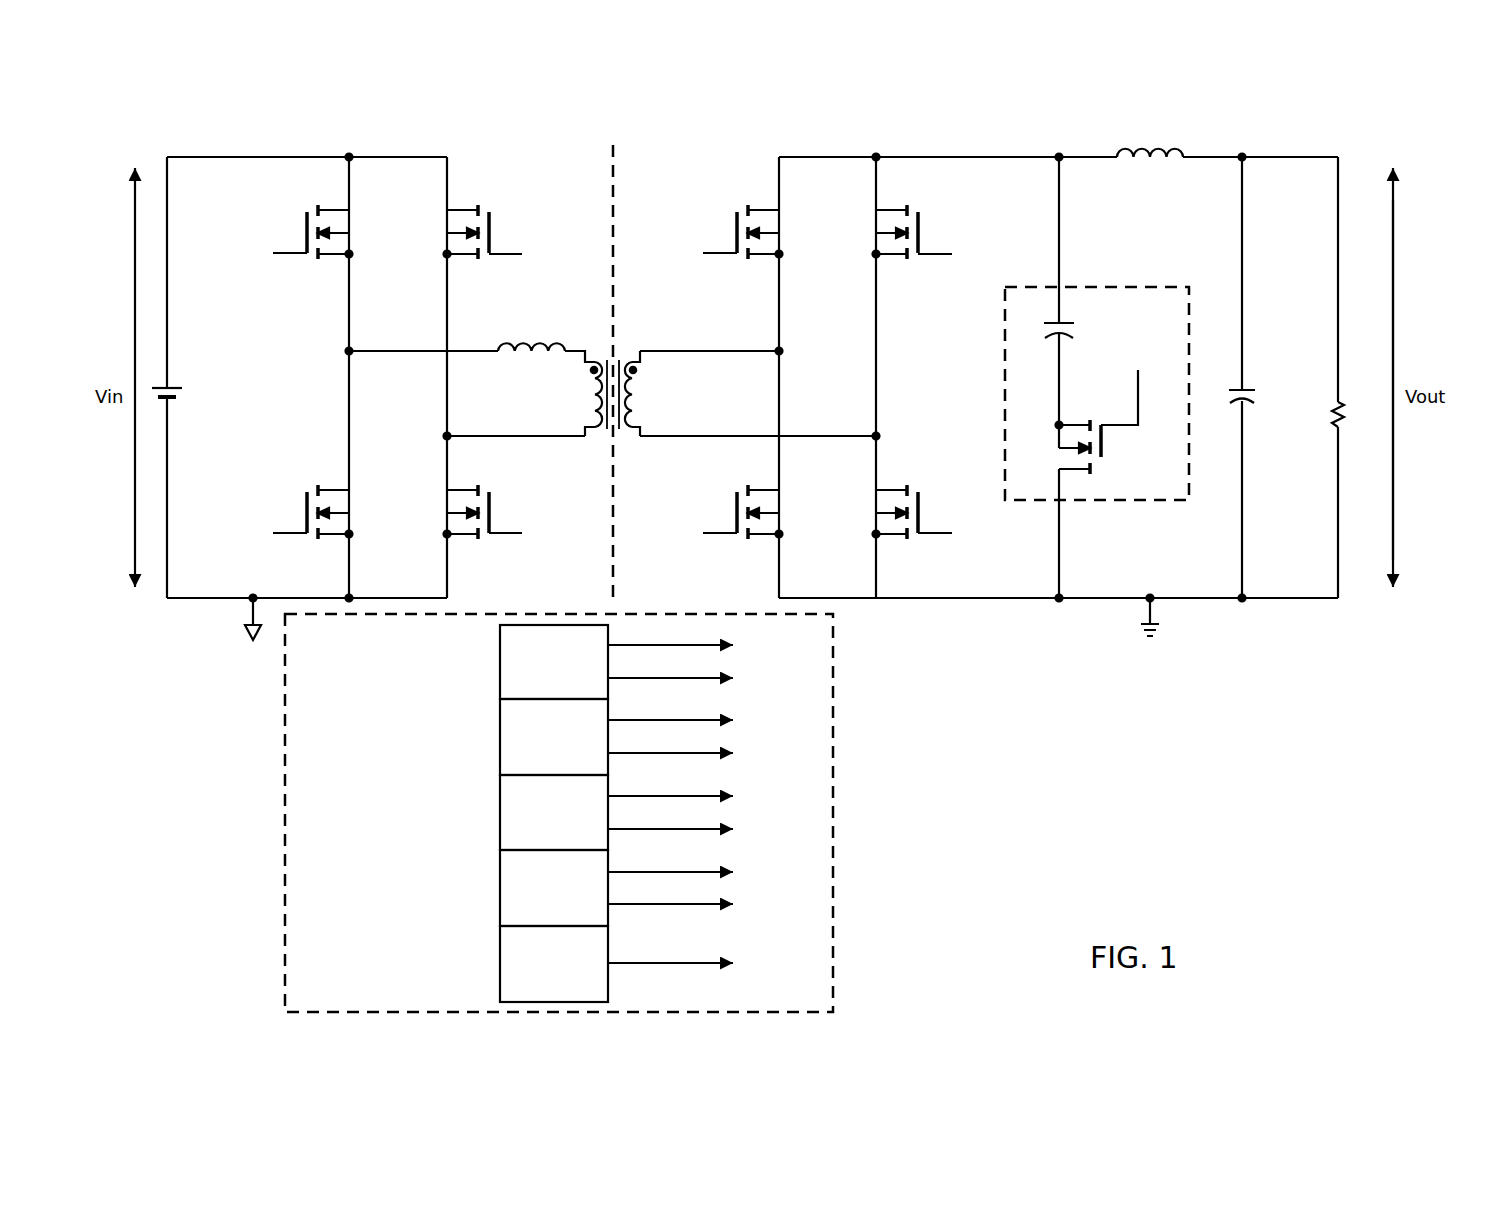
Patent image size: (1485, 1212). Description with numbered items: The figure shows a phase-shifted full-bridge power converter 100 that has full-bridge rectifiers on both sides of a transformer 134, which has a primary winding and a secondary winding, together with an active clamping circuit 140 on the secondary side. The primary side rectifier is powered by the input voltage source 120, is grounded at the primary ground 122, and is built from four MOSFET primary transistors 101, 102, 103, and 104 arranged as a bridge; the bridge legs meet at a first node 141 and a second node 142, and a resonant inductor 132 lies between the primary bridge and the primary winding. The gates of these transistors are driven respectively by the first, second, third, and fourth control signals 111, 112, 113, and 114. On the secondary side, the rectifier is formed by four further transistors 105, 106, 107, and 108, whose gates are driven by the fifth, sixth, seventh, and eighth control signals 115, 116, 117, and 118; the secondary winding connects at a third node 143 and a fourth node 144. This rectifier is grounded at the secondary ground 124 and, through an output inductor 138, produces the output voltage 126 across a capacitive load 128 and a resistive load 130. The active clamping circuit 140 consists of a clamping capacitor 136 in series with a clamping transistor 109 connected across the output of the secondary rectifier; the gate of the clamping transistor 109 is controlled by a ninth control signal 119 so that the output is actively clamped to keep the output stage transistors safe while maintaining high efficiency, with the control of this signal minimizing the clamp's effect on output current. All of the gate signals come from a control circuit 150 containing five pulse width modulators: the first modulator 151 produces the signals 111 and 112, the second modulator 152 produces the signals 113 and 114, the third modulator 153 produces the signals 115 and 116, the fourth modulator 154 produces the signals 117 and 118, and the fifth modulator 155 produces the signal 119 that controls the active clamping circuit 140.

The phase-shifted full-bridge power converter 100 is at (1420, 168).
The transistor Q1 101 is at (307, 222).
The transistor Q2 102 is at (307, 502).
The transistor Q3 103 is at (489, 222).
The transistor Q4 104 is at (489, 502).
The transistor Q5 105 is at (737, 222).
The transistor Q6 106 is at (737, 502).
The transistor Q7 107 is at (918, 222).
The transistor Q8 108 is at (918, 502).
The transistor Q9 109 is at (1104, 458).
The signal PWM1A 111 is at (290, 256).
The signal PWM1B 112 is at (290, 536).
The signal PWM2A 113 is at (505, 258).
The signal PWM2B 114 is at (505, 538).
The signal PWM3A 115 is at (720, 256).
The signal PWM3B 116 is at (720, 536).
The signal PWM4A 117 is at (935, 258).
The signal PWM4B 118 is at (935, 538).
The signal PWM5A 119 is at (1138, 396).
The input voltage Vin 120 is at (183, 397).
The primary ground GND_P 122 is at (245, 632).
The secondary ground GND_S 124 is at (1168, 630).
The output voltage Vout 126 is at (1393, 285).
The capacitive load Co 128 is at (1256, 396).
The resistive load RL 130 is at (1333, 422).
The inductor Lr 132 is at (538, 333).
The transformer T1 134 is at (680, 404).
The capacitor C1 136 is at (1074, 332).
The inductor Lo 138 is at (1160, 143).
The active clamping circuit 140 is at (1107, 280).
The node V1 141 is at (349, 351).
The node V2 142 is at (447, 436).
The node V3 143 is at (779, 351).
The node V4 144 is at (876, 436).
The control circuit 150 is at (338, 847).
The pulse width modulator PWM1 151 is at (500, 662).
The pulse width modulator PWM2 152 is at (500, 738).
The pulse width modulator PWM3 153 is at (500, 812).
The pulse width modulator PWM4 154 is at (500, 888).
The pulse width modulator PWM5 155 is at (500, 976).